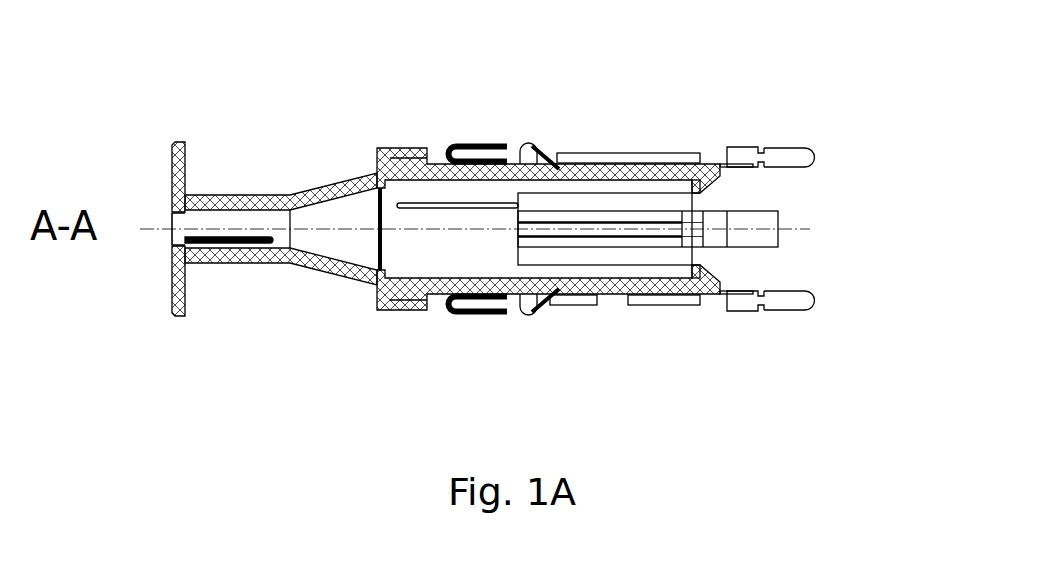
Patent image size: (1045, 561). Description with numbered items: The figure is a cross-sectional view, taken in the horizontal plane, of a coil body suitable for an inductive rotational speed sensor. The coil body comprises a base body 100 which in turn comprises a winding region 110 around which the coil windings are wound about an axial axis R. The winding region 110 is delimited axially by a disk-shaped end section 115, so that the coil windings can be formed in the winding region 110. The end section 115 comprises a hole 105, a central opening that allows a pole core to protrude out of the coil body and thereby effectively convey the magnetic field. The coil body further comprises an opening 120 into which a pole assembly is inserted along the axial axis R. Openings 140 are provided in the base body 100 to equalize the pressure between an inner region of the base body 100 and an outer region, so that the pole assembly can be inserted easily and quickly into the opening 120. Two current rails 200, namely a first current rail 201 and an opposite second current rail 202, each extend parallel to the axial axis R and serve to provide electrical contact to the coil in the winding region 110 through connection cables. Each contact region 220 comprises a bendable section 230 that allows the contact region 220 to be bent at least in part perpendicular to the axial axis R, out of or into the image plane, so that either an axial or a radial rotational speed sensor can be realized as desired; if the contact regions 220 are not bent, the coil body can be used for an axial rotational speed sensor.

The base body 100 is at (392, 150).
The hole 105 is at (152, 212).
The winding region 110 is at (257, 146).
The disk-shaped end section 115 is at (175, 317).
The opening 120 is at (782, 193).
The openings 140 is at (440, 202).
The current rails 200 is at (529, 229).
The first current rail 201 is at (610, 153).
The second current rail 202 is at (460, 307).
The contact region 220 is at (793, 120).
The bendable section 230 is at (758, 138).
The axial axis R is at (153, 232).